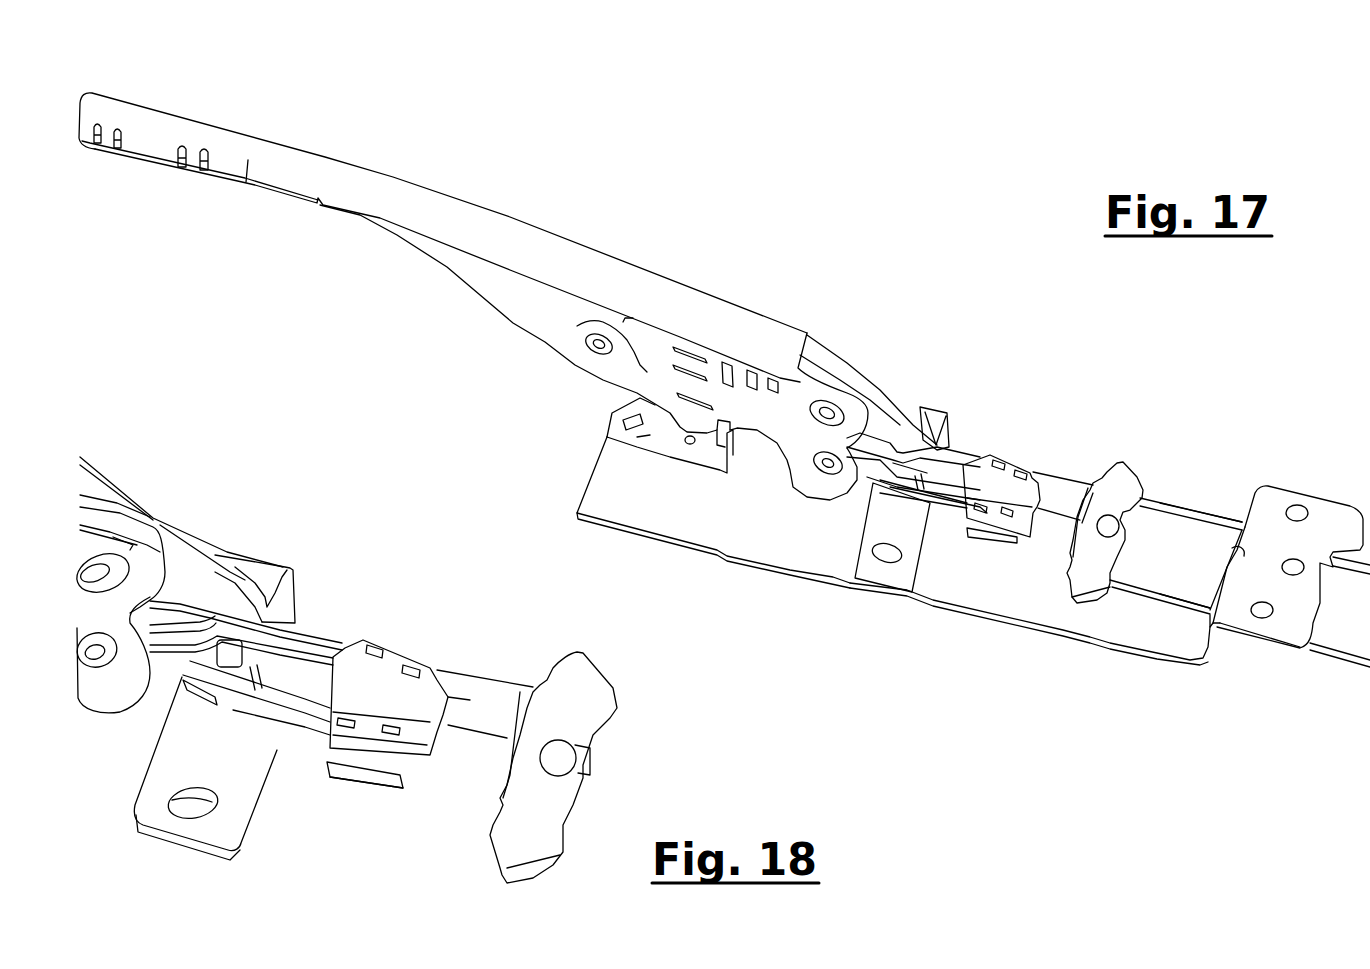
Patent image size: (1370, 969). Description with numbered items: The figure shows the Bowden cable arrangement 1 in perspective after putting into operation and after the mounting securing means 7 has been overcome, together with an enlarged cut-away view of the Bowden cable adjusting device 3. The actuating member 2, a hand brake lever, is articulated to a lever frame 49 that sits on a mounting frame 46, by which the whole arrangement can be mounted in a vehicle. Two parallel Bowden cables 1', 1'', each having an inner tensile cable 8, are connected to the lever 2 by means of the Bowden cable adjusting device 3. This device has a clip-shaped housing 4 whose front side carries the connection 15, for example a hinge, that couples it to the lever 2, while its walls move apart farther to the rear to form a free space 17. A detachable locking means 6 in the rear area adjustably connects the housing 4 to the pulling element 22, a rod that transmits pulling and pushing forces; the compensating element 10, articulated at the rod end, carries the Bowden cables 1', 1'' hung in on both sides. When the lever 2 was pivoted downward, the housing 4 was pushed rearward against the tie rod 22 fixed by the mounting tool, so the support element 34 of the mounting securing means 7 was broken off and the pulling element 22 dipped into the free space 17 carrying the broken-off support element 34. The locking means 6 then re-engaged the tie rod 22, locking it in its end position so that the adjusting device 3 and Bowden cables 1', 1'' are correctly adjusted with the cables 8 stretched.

In FIG. 17, the Bowden cable arrangement 1 is at (1240, 528).
In FIG. 17, the Bowden cable 1' is at (1291, 519).
In FIG. 17, the Bowden cable 1'' is at (1278, 677).
In FIG. 17, the actuating member 2 is at (530, 243).
In FIG. 18, the actuating member 2 is at (82, 475).
In FIG. 17, the Bowden cable adjusting device 3 is at (968, 558).
In FIG. 18, the Bowden cable adjusting device 3 is at (350, 797).
In FIG. 17, the housing 4 is at (960, 453).
In FIG. 18, the housing 4 is at (233, 710).
In FIG. 17, the detachable locking means 6 is at (1042, 445).
In FIG. 18, the detachable locking means 6 is at (412, 648).
In FIG. 17, the mounting securing means 7 is at (1063, 496).
In FIG. 18, the mounting securing means 7 is at (485, 704).
In FIG. 17, the tensile cable 8 is at (1205, 522).
In FIG. 17, the compensating element 10 is at (1123, 483).
In FIG. 18, the compensating element 10 is at (587, 697).
In FIG. 17, the connection 15 is at (820, 467).
In FIG. 18, the connection 15 is at (97, 651).
In FIG. 18, the free space 17 is at (234, 670).
In FIG. 17, the pulling element 22 is at (933, 482).
In FIG. 18, the pulling element 22 is at (277, 690).
In FIG. 17, the support element 34 is at (923, 474).
In FIG. 18, the support element 34 is at (258, 667).
In FIG. 17, the mounting frame 46 is at (623, 485).
In FIG. 17, the lever frame 49 is at (610, 412).
In FIG. 18, the lever frame 49 is at (263, 573).